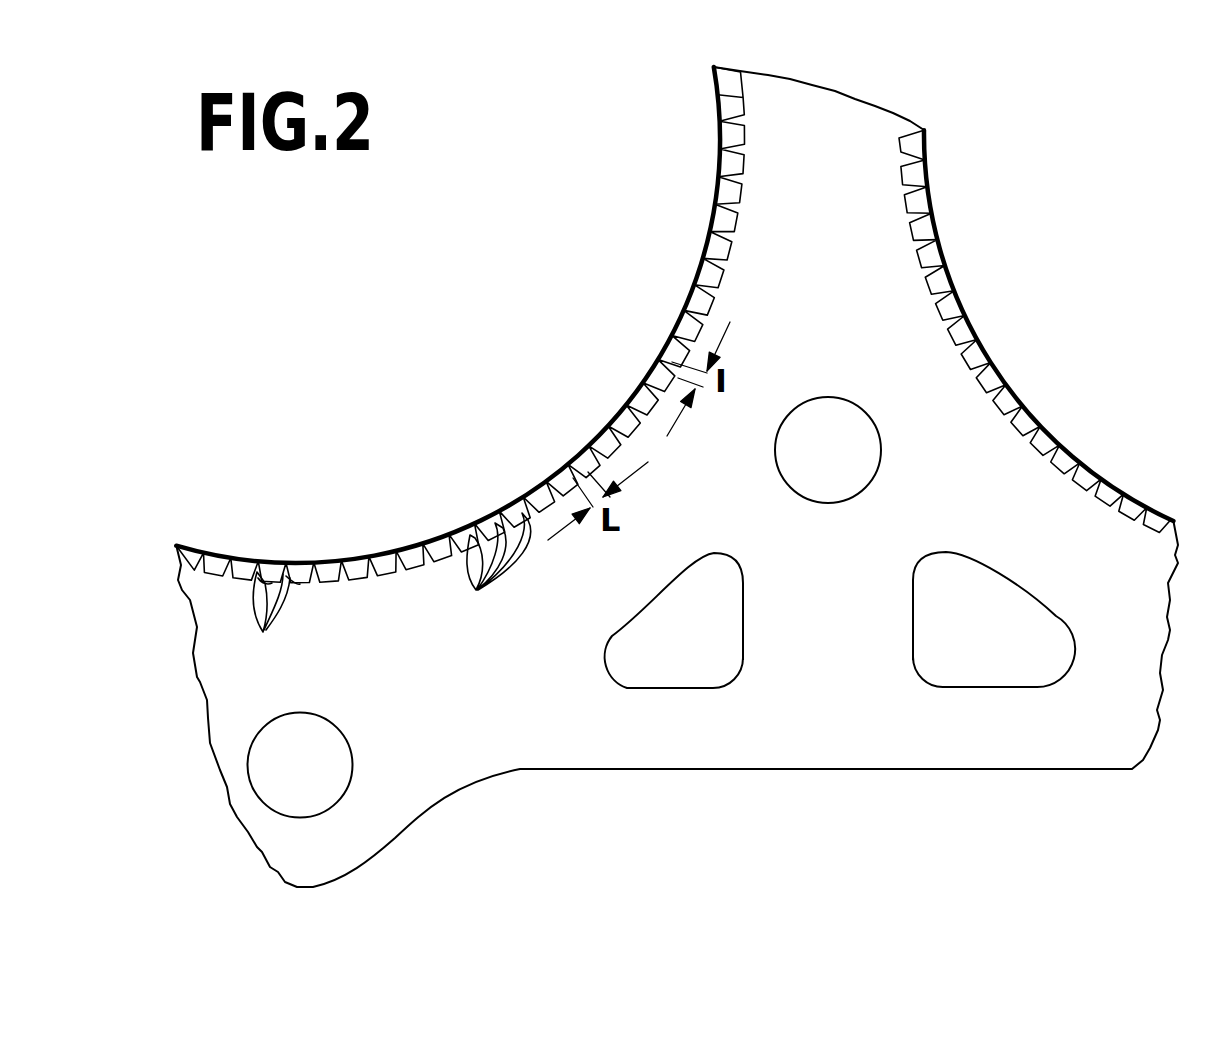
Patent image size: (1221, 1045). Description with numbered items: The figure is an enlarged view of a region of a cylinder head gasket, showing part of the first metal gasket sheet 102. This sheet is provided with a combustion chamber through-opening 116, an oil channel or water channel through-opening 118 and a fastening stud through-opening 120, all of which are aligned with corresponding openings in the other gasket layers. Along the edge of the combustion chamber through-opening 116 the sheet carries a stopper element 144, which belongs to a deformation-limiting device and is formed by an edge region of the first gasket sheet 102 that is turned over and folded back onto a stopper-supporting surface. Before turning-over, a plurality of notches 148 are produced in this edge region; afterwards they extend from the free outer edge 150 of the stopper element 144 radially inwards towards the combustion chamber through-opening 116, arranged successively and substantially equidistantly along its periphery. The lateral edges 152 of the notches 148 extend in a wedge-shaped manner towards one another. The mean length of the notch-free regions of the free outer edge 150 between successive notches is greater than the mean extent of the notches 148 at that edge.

The first metal gasket sheet 102 is at (712, 745).
The combustion chamber through-opening 116 is at (495, 366).
The oil channel or water channel through-opening 118 is at (617, 660).
The fastening stud through-opening 120 is at (817, 483).
The stopper element 144 is at (735, 163).
The notches 148 is at (489, 575).
The free outer edge 150 is at (733, 243).
The lateral edges 152 is at (271, 622).